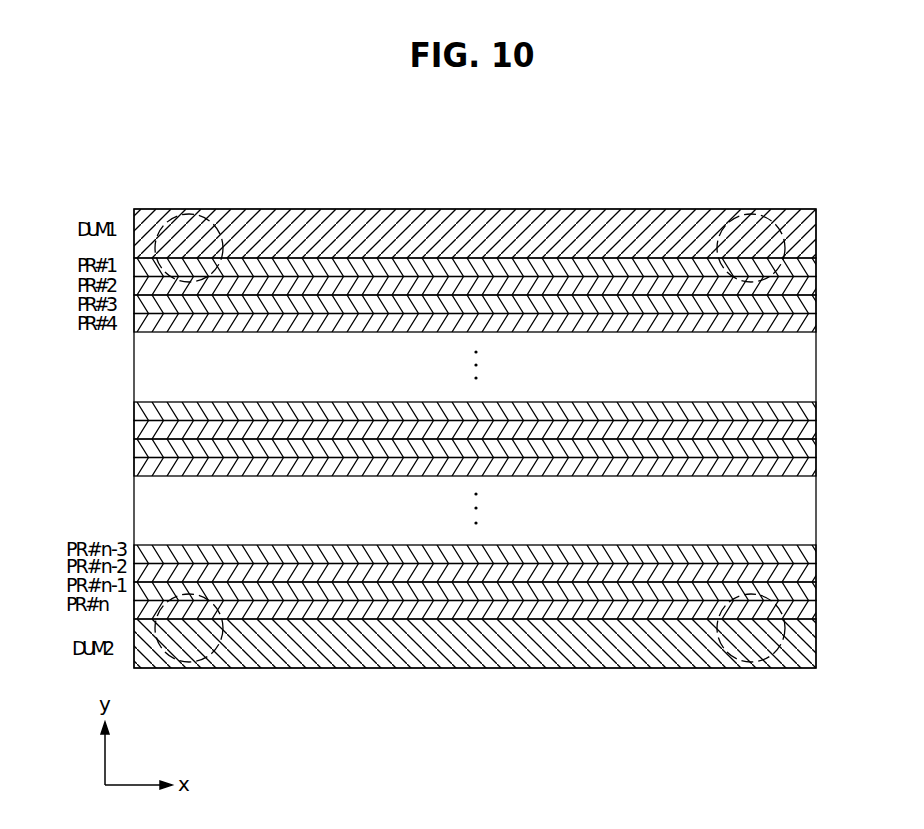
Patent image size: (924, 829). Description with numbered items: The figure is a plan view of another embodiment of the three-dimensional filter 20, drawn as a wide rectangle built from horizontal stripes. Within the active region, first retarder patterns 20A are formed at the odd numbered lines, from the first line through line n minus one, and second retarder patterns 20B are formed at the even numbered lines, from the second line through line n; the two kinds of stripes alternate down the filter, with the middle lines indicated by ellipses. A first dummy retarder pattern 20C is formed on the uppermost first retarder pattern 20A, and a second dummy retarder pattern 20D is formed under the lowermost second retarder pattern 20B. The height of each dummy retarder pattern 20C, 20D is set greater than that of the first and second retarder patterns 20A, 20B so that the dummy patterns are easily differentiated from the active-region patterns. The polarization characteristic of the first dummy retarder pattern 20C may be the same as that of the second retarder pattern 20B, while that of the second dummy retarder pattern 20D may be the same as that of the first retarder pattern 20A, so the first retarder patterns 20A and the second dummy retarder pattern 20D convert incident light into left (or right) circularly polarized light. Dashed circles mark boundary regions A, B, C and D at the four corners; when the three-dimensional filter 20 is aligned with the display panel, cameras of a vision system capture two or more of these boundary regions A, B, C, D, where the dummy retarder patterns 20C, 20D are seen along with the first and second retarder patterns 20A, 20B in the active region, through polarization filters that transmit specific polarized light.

The 3D filter 20 is at (147, 149).
The first retarder patterns 20A is at (812, 265).
The second retarder patterns 20B is at (812, 287).
The first dummy retarder pattern 20C is at (812, 240).
The second dummy retarder pattern 20D is at (812, 640).
The boundary region A is at (186, 213).
The boundary region B is at (748, 213).
The boundary region C is at (188, 663).
The boundary region D is at (749, 663).